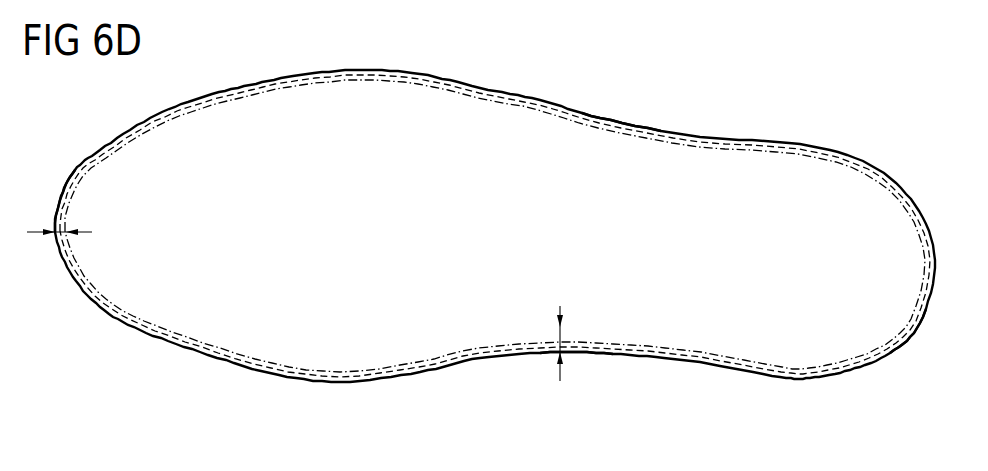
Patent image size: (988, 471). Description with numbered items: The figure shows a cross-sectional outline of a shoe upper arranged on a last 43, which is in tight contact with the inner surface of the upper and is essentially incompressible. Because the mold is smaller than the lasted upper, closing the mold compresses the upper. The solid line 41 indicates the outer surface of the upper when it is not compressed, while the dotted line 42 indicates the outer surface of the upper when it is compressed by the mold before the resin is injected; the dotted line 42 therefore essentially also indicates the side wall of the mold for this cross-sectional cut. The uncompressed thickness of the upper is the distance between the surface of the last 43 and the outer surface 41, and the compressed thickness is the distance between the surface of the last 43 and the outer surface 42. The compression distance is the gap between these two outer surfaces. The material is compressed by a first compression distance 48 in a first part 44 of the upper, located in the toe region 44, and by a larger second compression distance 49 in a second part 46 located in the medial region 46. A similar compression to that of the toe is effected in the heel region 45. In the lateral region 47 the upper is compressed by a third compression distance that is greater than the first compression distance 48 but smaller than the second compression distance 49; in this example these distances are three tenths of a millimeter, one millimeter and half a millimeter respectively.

The solid line 41 is at (710, 366).
The dotted line 42 is at (672, 350).
The last 43 is at (630, 334).
The first part of the upper 44 is at (54, 184).
The heel region 45 is at (926, 333).
The second part of the upper 46 is at (584, 368).
The lateral region 47 is at (618, 108).
The first compression distance 48 is at (57, 238).
The second compression distance 49 is at (556, 352).